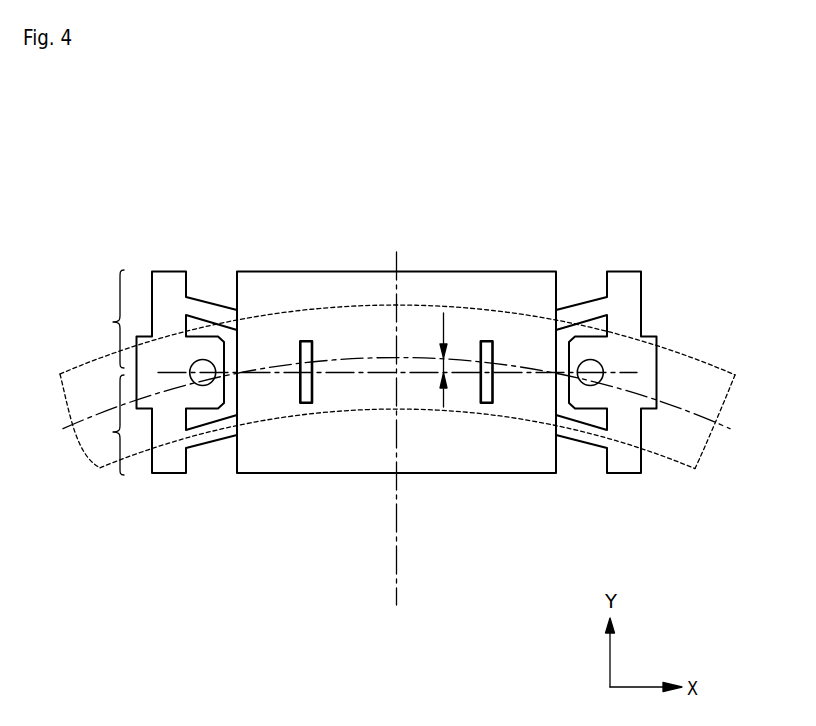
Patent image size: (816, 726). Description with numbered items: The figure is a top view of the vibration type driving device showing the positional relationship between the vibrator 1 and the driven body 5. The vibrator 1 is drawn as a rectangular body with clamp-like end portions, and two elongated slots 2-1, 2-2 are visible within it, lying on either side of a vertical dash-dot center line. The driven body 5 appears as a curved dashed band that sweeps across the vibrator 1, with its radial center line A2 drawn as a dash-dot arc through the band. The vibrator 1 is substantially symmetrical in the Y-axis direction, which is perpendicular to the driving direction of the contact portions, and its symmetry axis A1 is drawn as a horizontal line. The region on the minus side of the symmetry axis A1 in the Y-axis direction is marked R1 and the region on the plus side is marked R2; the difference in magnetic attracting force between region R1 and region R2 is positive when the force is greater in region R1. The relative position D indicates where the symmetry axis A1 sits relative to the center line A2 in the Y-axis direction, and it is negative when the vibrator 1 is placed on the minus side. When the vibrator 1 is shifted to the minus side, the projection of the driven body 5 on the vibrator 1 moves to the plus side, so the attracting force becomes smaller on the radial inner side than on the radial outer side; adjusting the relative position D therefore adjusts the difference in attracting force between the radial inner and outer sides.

The vibrator 1 is at (434, 450).
The first slot 2-1 is at (488, 397).
The second slot 2-2 is at (307, 397).
The driven body 5 is at (362, 333).
The symmetry axis A1 is at (627, 370).
The radial center line A2 is at (721, 427).
The relative position D is at (437, 359).
The region on the minus side R1 is at (103, 425).
The region on the plus side R2 is at (103, 319).